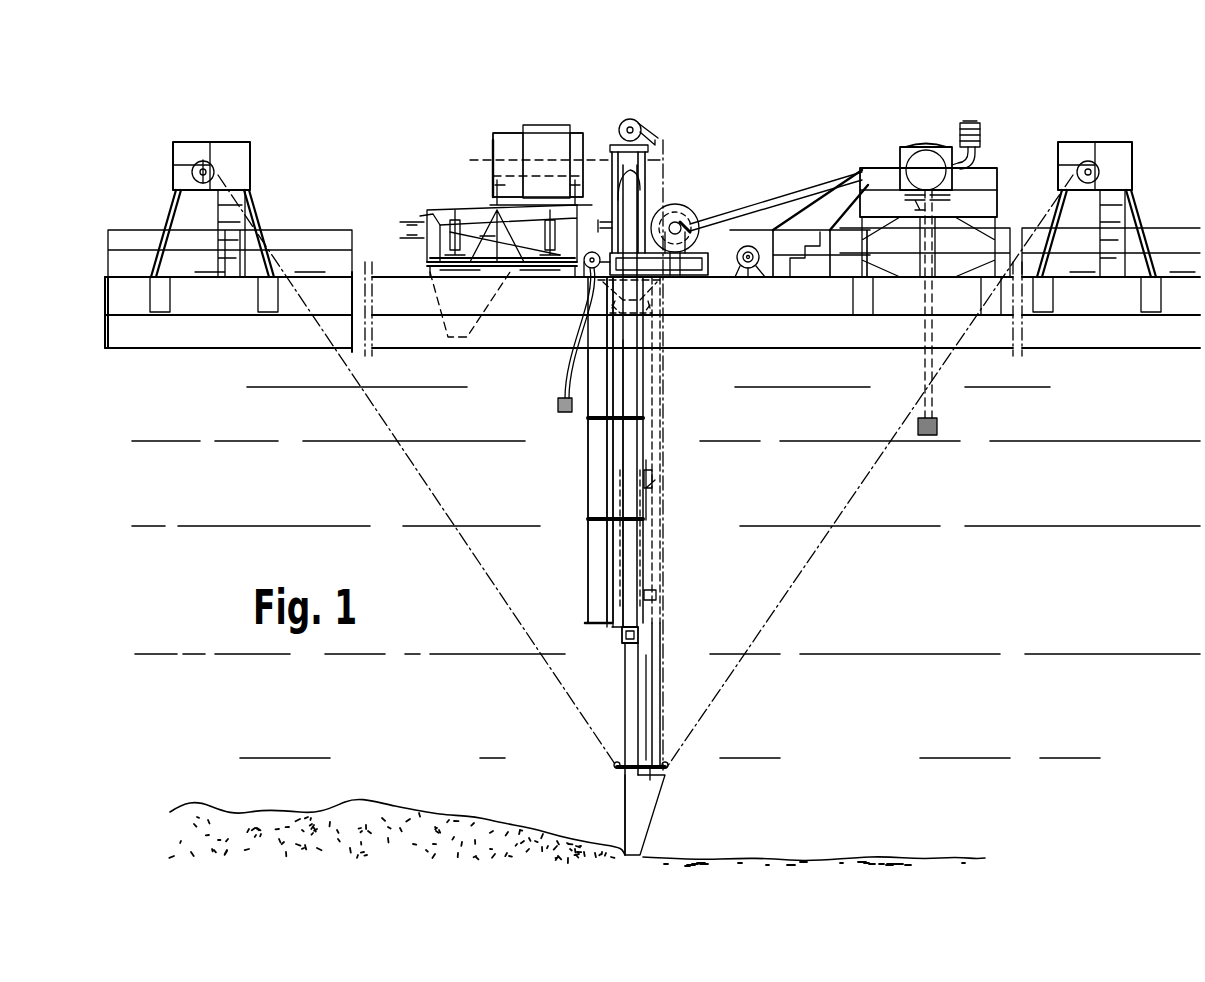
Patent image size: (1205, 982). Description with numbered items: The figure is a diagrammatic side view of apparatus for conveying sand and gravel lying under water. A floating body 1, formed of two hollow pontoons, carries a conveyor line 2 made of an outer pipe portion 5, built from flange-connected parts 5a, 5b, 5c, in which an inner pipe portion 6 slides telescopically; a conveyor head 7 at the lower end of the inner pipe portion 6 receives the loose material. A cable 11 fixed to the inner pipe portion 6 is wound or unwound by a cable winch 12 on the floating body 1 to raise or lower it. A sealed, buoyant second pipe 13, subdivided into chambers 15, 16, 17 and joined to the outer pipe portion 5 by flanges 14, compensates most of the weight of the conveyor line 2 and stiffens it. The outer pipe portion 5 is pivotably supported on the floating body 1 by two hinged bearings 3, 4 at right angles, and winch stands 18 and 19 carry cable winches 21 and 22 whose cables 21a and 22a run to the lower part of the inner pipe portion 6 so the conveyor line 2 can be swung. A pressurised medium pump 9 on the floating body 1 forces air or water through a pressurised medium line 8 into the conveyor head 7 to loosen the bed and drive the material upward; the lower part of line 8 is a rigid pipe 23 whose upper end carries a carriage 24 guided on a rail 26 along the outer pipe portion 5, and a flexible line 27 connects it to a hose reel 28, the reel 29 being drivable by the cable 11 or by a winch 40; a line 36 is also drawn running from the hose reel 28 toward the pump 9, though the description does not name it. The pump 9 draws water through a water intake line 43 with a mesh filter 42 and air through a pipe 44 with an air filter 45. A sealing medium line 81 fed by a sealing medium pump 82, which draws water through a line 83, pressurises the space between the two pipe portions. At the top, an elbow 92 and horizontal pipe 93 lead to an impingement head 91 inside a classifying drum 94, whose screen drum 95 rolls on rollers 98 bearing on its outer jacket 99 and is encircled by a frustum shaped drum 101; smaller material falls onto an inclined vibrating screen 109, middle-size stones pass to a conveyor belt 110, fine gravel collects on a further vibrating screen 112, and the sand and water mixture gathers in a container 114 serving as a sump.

The floating body 1 is at (1085, 377).
The conveyor line 2 is at (672, 512).
The hinged bearing 3 is at (648, 284).
The hinged bearing 4 is at (655, 313).
The outer pipe portion 5 is at (618, 440).
The part of outer pipe portion 5a is at (632, 386).
The part of outer pipe portion 5b is at (632, 440).
The part of outer pipe portion 5c is at (632, 548).
The inner pipe portion 6 is at (630, 688).
The conveyor head 7 is at (620, 800).
The pressurised medium line 8 is at (665, 665).
The pressurised medium pump 9 is at (915, 135).
The cable 11 is at (665, 570).
The cable winch 12 is at (632, 118).
The second pipe 13 is at (580, 482).
The flanges 14 is at (585, 519).
The chamber 15 is at (593, 372).
The chamber 16 is at (596, 490).
The chamber 17 is at (596, 561).
The winch stand 18 is at (258, 170).
The winch stand 19 is at (1140, 168).
The cable winch 21 is at (192, 172).
The cable 21a is at (406, 452).
The cable winch 22 is at (1100, 165).
The cable 22a is at (866, 486).
The rigid pipe 23 is at (655, 695).
The carriage 24 is at (652, 483).
The rail 26 is at (656, 595).
The flexible line 27 is at (655, 362).
The hose reel 28 is at (682, 205).
The reel 29 is at (683, 225).
The hose line / platform 36 is at (776, 205).
The winch 40 is at (756, 265).
The mesh filter 42 is at (940, 428).
The water intake line 43 is at (922, 370).
The pipe 44 is at (978, 162).
The air filter 45 is at (985, 130).
The sealing medium line 81 is at (612, 582).
The sealing medium pump 82 is at (586, 282).
The line 83 is at (560, 384).
The impingement head 91 is at (490, 158).
The elbow 92 is at (650, 150).
The horizontal pipe 93 is at (590, 135).
The classifying drum 94 is at (530, 130).
The screen drum 95 is at (510, 128).
The rollers 98 is at (495, 192).
The outer jacket 99 is at (495, 135).
The frustum shaped drum 101 is at (552, 128).
The inclined vibrating screen 109 is at (440, 200).
The conveyor belt 110 is at (404, 222).
The vibrating screen 112 is at (430, 258).
The container 114 is at (445, 327).